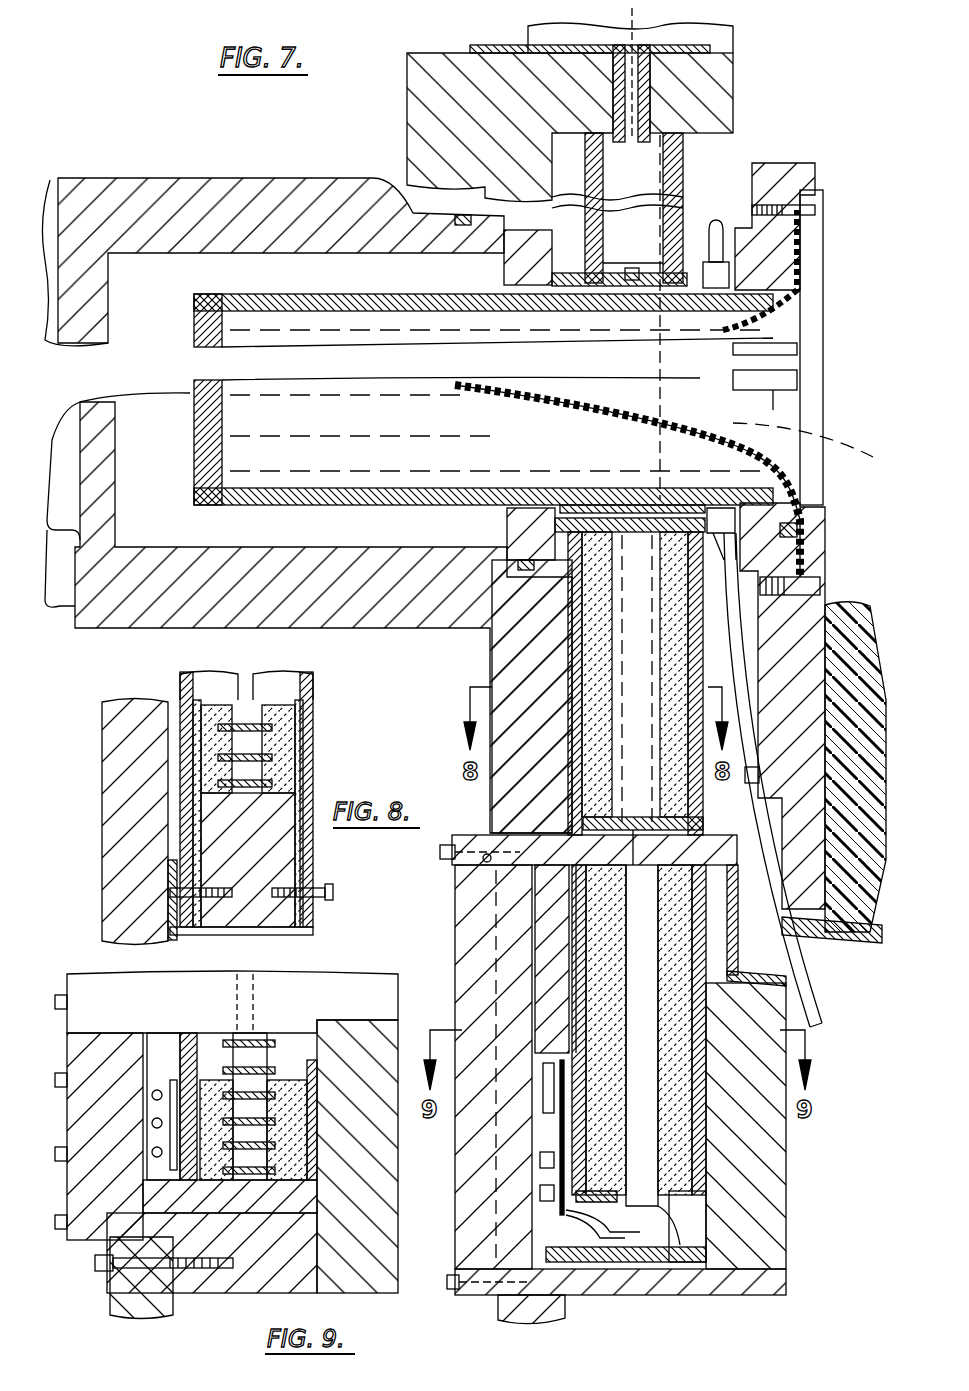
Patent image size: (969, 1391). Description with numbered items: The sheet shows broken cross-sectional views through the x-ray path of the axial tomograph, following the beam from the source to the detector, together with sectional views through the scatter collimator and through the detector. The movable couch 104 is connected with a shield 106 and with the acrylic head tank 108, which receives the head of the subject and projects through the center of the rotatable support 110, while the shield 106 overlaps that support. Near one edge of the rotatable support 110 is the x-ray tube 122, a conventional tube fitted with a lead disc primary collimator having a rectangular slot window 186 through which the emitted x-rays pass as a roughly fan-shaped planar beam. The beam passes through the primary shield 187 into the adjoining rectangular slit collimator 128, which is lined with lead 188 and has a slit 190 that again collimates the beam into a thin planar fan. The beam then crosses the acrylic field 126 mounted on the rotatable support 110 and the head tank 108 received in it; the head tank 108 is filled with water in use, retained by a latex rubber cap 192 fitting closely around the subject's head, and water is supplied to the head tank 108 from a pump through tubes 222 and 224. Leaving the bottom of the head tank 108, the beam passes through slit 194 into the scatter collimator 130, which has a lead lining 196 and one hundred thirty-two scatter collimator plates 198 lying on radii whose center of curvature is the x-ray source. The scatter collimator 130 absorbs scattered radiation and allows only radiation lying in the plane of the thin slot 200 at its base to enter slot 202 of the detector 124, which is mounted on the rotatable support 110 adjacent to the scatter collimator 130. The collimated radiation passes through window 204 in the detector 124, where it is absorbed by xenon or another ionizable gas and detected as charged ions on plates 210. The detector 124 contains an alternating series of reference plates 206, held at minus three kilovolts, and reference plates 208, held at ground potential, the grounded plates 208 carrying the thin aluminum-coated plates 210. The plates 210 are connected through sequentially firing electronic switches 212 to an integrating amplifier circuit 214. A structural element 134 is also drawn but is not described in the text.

In FIG. 7, the movable couch 104 is at (874, 692).
In FIG. 7, the shield 106 is at (848, 946).
In FIG. 7, the head tank 108 is at (196, 350).
In FIG. 7, the rotatable support 110 is at (407, 153).
In FIG. 8, the rotatable support 110 is at (105, 786).
In FIG. 7, the x-ray tube 122 is at (514, 36).
In FIG. 7, the x-ray detector 124 is at (772, 1142).
In FIG. 9, the x-ray detector 124 is at (395, 1293).
In FIG. 7, the acrylic field 126 is at (504, 264).
In FIG. 7, the slit collimator 128 is at (686, 196).
In FIG. 7, the scatter collimator 130 is at (572, 636).
In FIG. 8, the scatter collimator 130 is at (315, 862).
In FIG. 7, the upper body 134 is at (148, 185).
In FIG. 7, the rectangular slot window 186 is at (636, 44).
In FIG. 7, the primary shield 187 is at (648, 93).
In FIG. 7, the lead lining 188 is at (604, 166).
In FIG. 7, the slit 190 is at (627, 268).
In FIG. 7, the latex rubber cap 192 is at (678, 420).
In FIG. 7, the slit 194 is at (640, 518).
In FIG. 7, the lead lining 196 is at (590, 655).
In FIG. 8, the lead lining 196 is at (305, 706).
In FIG. 7, the scatter collimator plates 198 is at (690, 505).
In FIG. 8, the scatter collimator plates 198 is at (275, 782).
In FIG. 7, the thin slot 200 is at (700, 814).
In FIG. 8, the thin slot 200 is at (245, 668).
In FIG. 7, the slot 202 is at (520, 836).
In FIG. 9, the slot 202 is at (246, 976).
In FIG. 7, the window 204 is at (556, 880).
In FIG. 9, the window 204 is at (188, 1040).
In FIG. 7, the reference plates 206 is at (700, 1265).
In FIG. 9, the reference plates 206 is at (265, 1004).
In FIG. 7, the reference plates 208 is at (706, 1206).
In FIG. 9, the reference plates 208 is at (238, 1040).
In FIG. 7, the plates 210 is at (643, 1242).
In FIG. 7, the electronic switches 212 is at (540, 1192).
In FIG. 9, the electronic switches 212 is at (82, 1238).
In FIG. 7, the integrating amplifier circuit 214 is at (548, 1092).
In FIG. 7, the tube 222 is at (810, 1000).
In FIG. 7, the tube 224 is at (718, 221).